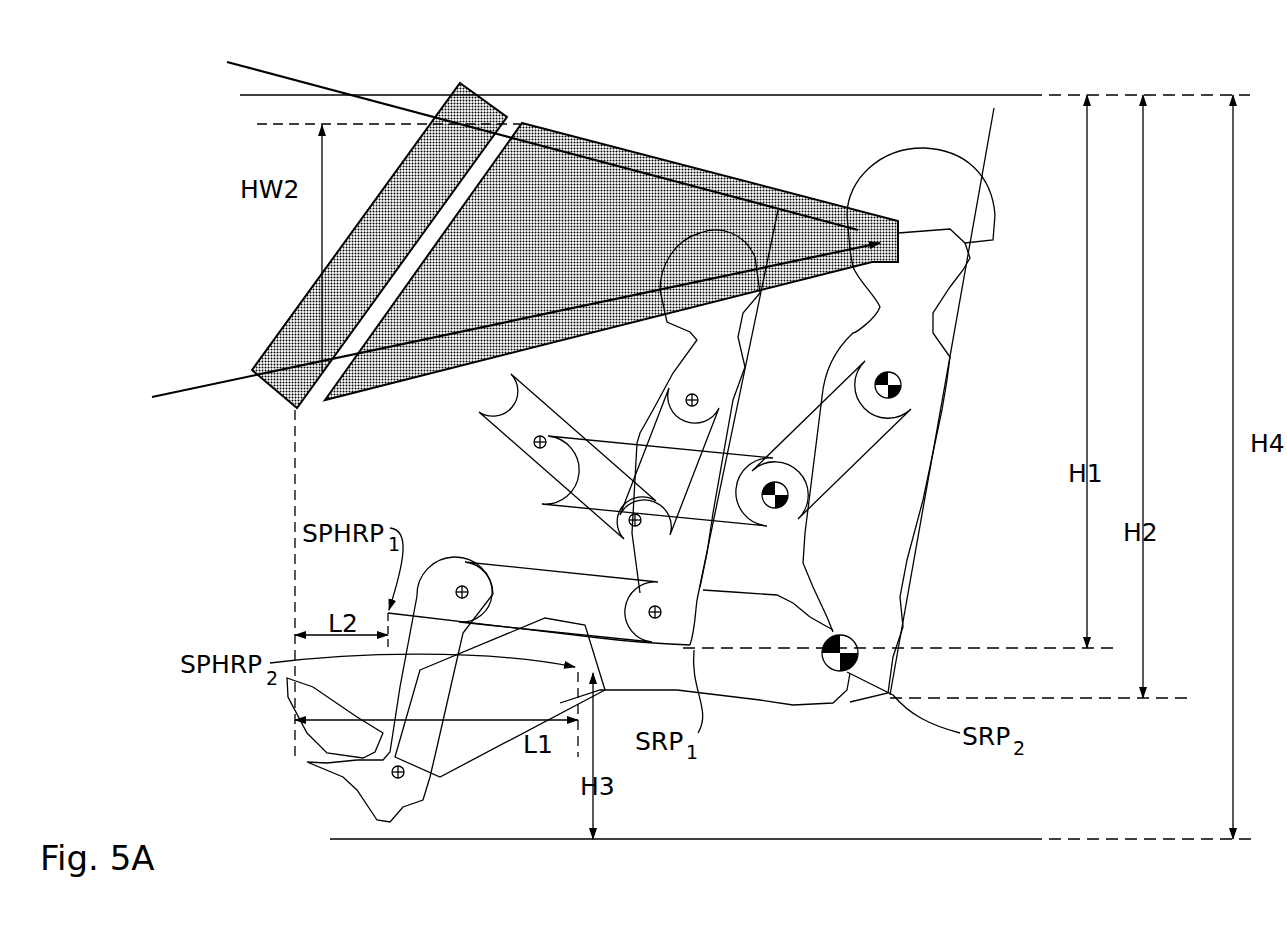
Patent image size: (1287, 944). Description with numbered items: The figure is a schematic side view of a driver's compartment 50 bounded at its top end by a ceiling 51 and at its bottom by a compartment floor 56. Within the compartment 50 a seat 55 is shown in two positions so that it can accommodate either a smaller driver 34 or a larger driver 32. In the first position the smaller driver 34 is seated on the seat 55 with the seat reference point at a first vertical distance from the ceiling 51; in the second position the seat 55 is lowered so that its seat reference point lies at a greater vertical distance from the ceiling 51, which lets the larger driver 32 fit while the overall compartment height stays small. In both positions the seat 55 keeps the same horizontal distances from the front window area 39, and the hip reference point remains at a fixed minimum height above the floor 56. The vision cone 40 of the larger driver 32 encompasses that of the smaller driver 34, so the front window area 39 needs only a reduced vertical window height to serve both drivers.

The larger driver 32 is at (1005, 190).
The smaller driver 34 is at (640, 382).
The front window area 39 is at (270, 395).
The vision cone 40 is at (617, 167).
The driver's compartment 50 is at (805, 145).
The ceiling 51 is at (688, 95).
The seat 55 is at (950, 435).
The compartment floor 56 is at (977, 839).